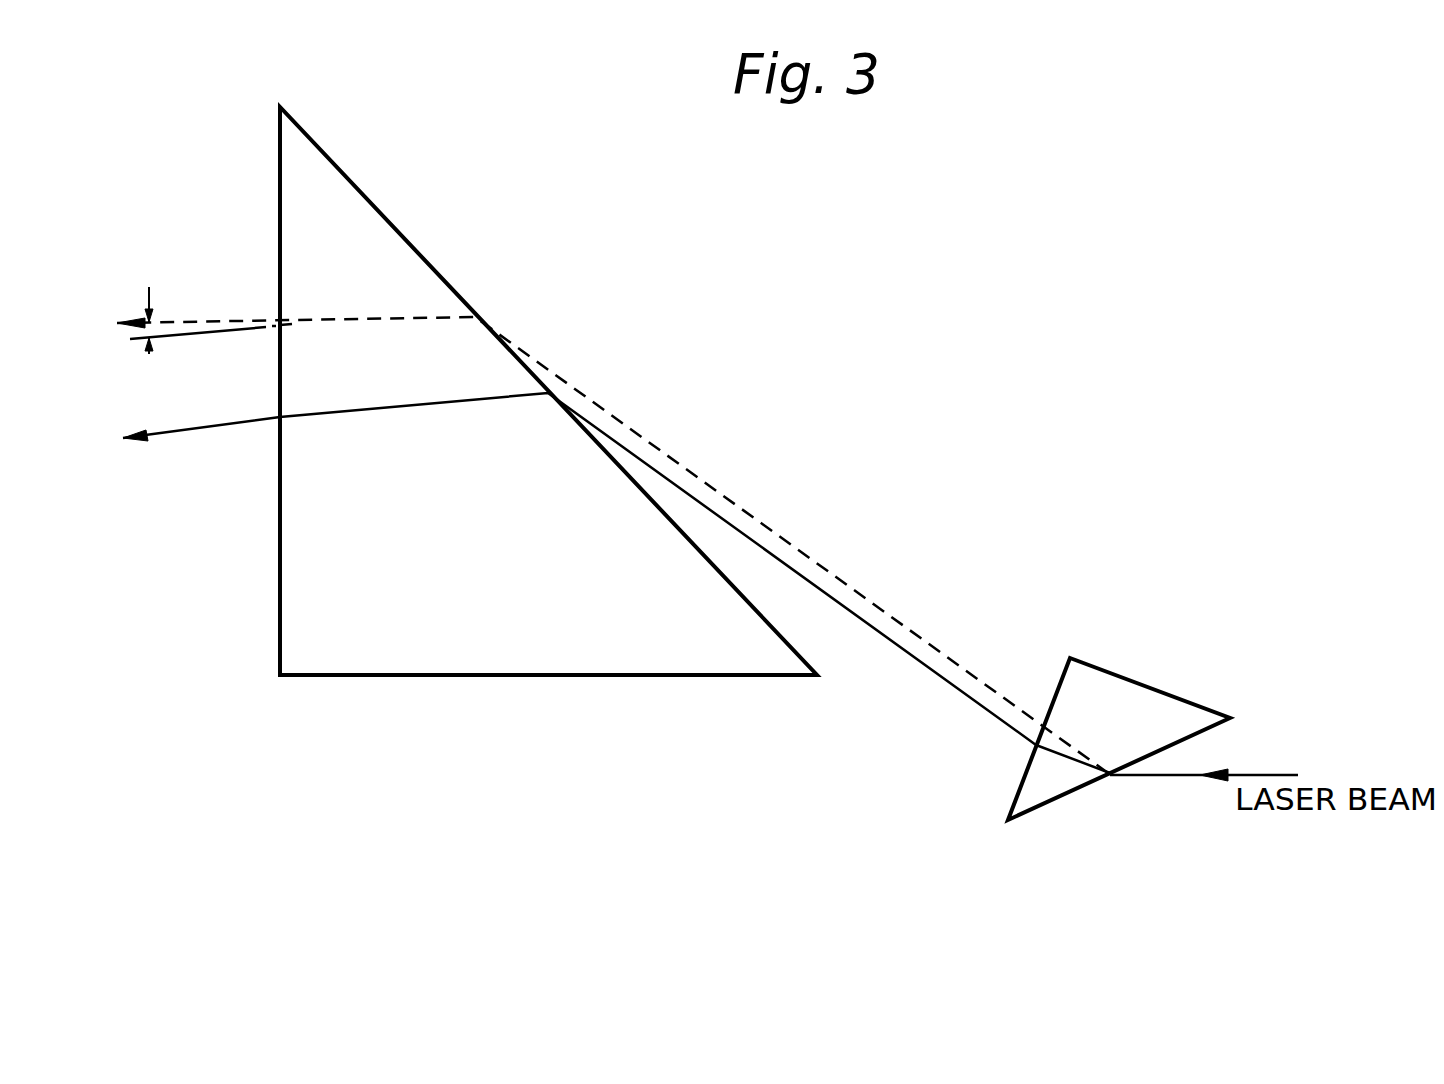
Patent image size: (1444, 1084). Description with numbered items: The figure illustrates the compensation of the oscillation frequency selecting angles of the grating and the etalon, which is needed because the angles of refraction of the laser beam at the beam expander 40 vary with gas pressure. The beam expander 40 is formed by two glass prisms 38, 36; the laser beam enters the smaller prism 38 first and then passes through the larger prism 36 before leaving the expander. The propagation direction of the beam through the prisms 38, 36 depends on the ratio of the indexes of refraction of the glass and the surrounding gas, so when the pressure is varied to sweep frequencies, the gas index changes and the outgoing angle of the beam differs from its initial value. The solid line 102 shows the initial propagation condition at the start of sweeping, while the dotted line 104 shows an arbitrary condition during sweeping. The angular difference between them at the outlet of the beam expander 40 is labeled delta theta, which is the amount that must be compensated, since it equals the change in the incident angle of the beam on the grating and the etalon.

The prism 36 is at (387, 210).
The prism 38 is at (1122, 677).
The beam expander 40 is at (866, 215).
The solid line 102 is at (197, 436).
The dotted line 104 is at (190, 323).